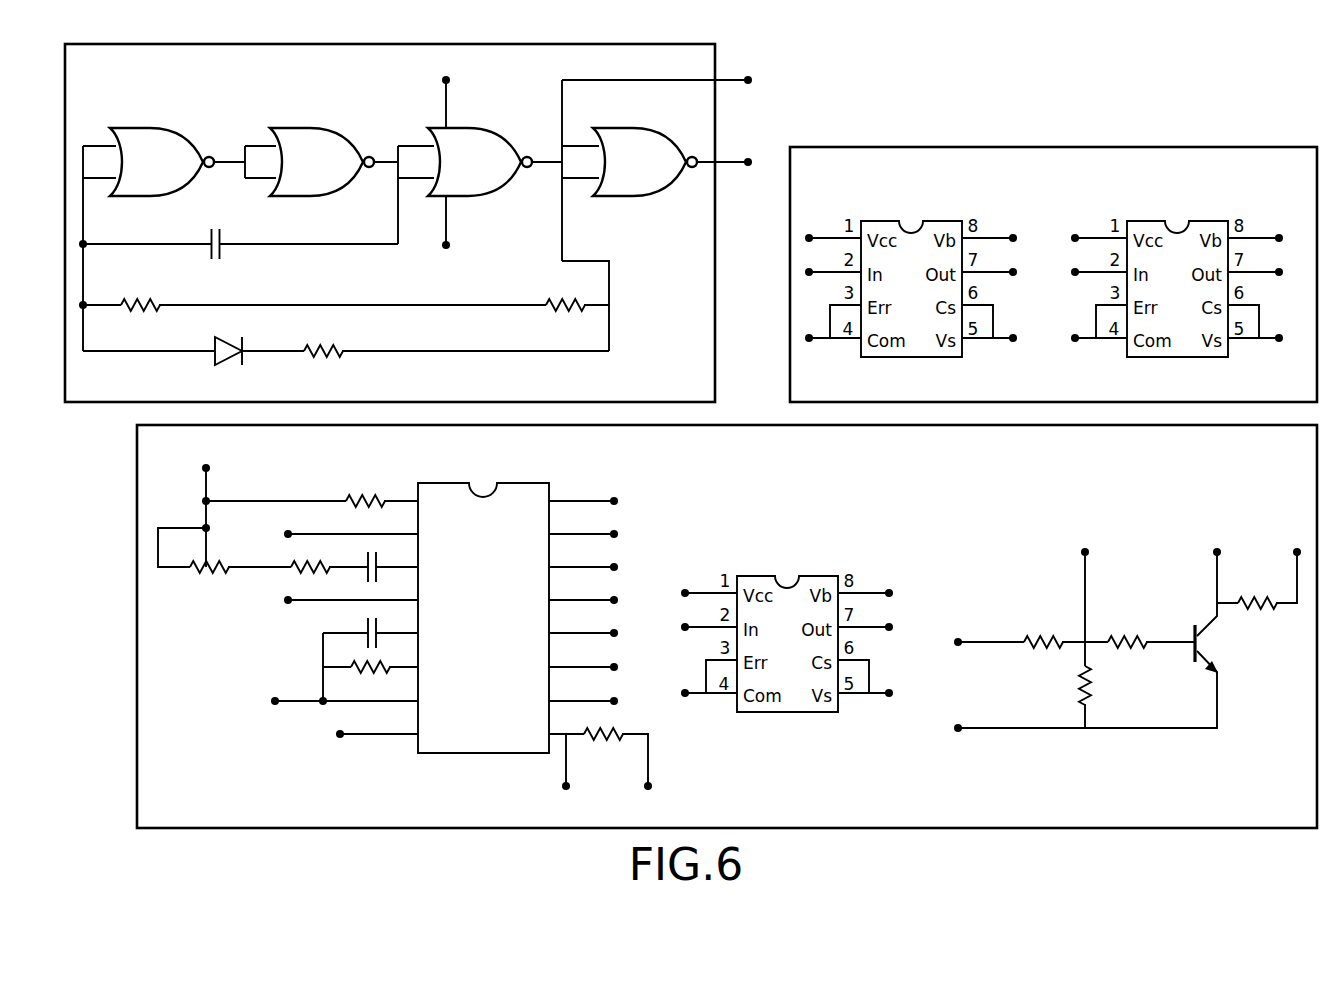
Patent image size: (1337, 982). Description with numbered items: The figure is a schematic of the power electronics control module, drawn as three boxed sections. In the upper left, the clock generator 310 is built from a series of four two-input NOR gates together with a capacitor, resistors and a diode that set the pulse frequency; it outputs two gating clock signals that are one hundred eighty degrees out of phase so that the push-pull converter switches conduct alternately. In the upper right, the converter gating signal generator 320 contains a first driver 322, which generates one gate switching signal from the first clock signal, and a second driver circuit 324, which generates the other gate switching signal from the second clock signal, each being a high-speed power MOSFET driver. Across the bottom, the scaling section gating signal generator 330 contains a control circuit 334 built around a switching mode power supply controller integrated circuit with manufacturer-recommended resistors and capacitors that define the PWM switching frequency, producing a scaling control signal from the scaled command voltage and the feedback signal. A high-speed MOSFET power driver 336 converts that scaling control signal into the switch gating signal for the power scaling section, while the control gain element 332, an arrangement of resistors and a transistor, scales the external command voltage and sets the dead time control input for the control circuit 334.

The clock generator 310 is at (85, 402).
The converter gating signal generator 320 is at (1053, 246).
The first driver 322 is at (968, 203).
The second driver circuit 324 is at (1208, 203).
The scaling section gating signal generator 330 is at (727, 657).
The control gain element 332 is at (1158, 535).
The control circuit 334 is at (543, 475).
The high-speed MOSFET power driver 336 is at (863, 543).